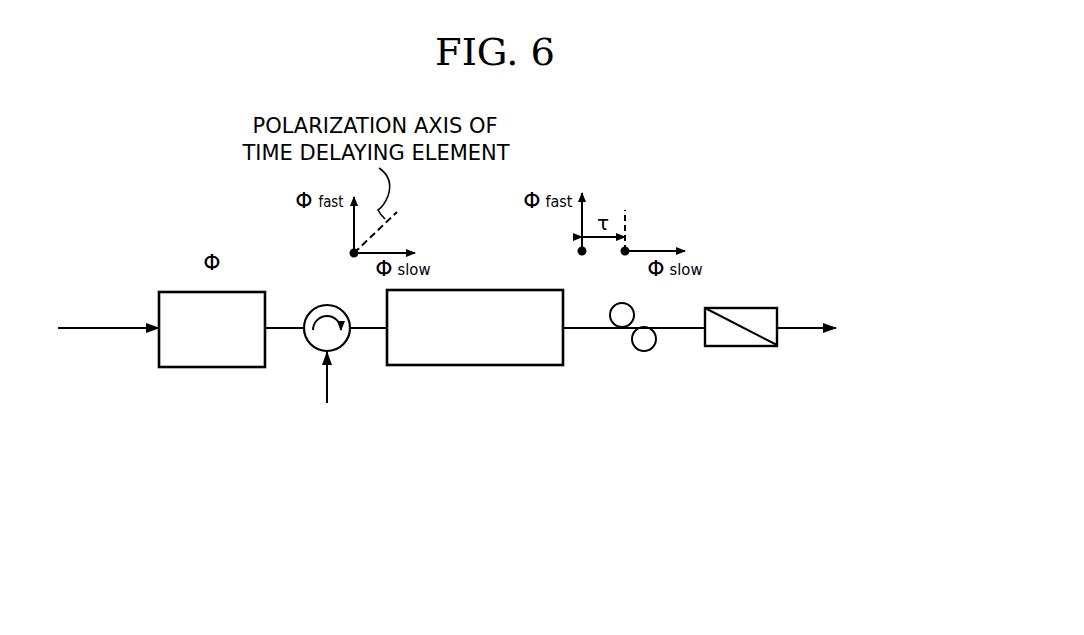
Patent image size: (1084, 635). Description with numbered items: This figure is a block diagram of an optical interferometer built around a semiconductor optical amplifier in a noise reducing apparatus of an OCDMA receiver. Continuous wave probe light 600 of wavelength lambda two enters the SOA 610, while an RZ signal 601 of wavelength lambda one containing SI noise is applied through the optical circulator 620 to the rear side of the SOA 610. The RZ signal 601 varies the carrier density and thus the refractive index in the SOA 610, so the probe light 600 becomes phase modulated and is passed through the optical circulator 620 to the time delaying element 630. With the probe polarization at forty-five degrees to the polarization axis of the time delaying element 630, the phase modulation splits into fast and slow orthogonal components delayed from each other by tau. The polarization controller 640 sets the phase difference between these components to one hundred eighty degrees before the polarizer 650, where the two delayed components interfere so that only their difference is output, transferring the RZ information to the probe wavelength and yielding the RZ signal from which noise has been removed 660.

The continuous wave (CW) probe light 600 is at (108, 273).
The RZ signal 601 is at (327, 421).
The SOA 610 is at (210, 367).
The optical circulator 620 is at (313, 301).
The time delaying element 630 is at (473, 365).
The polarization controller 640 is at (629, 357).
The polarizer 650 is at (741, 357).
The RZ signal from which noise has been removed 660 is at (846, 275).